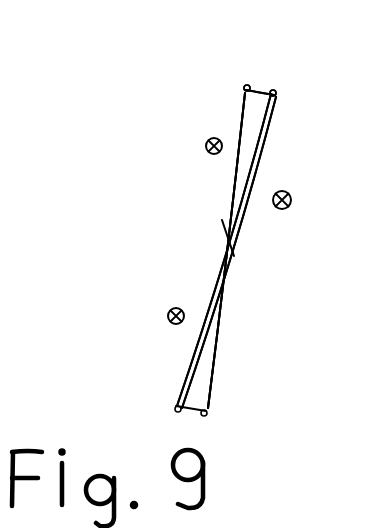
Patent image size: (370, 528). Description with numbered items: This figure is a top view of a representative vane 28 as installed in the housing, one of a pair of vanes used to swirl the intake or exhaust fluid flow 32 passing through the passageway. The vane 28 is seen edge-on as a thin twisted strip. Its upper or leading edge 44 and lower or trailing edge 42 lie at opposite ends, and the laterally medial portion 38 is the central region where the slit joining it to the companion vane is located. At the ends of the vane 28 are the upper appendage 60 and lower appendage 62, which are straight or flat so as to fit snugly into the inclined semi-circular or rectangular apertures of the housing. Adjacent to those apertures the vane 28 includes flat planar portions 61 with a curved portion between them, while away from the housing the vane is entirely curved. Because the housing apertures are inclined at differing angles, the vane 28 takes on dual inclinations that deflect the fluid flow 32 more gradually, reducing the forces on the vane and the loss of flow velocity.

The vane 28 is at (208, 118).
The intake or exhaust fluid flow 32 is at (301, 194).
The laterally medial portion 38 is at (236, 239).
The lower or trailing edge 42 is at (217, 347).
The upper or leading edge 44 is at (268, 137).
The upper appendage 60 is at (270, 98).
The flat planar portion 61 is at (235, 193).
The lower appendage 62 is at (251, 86).